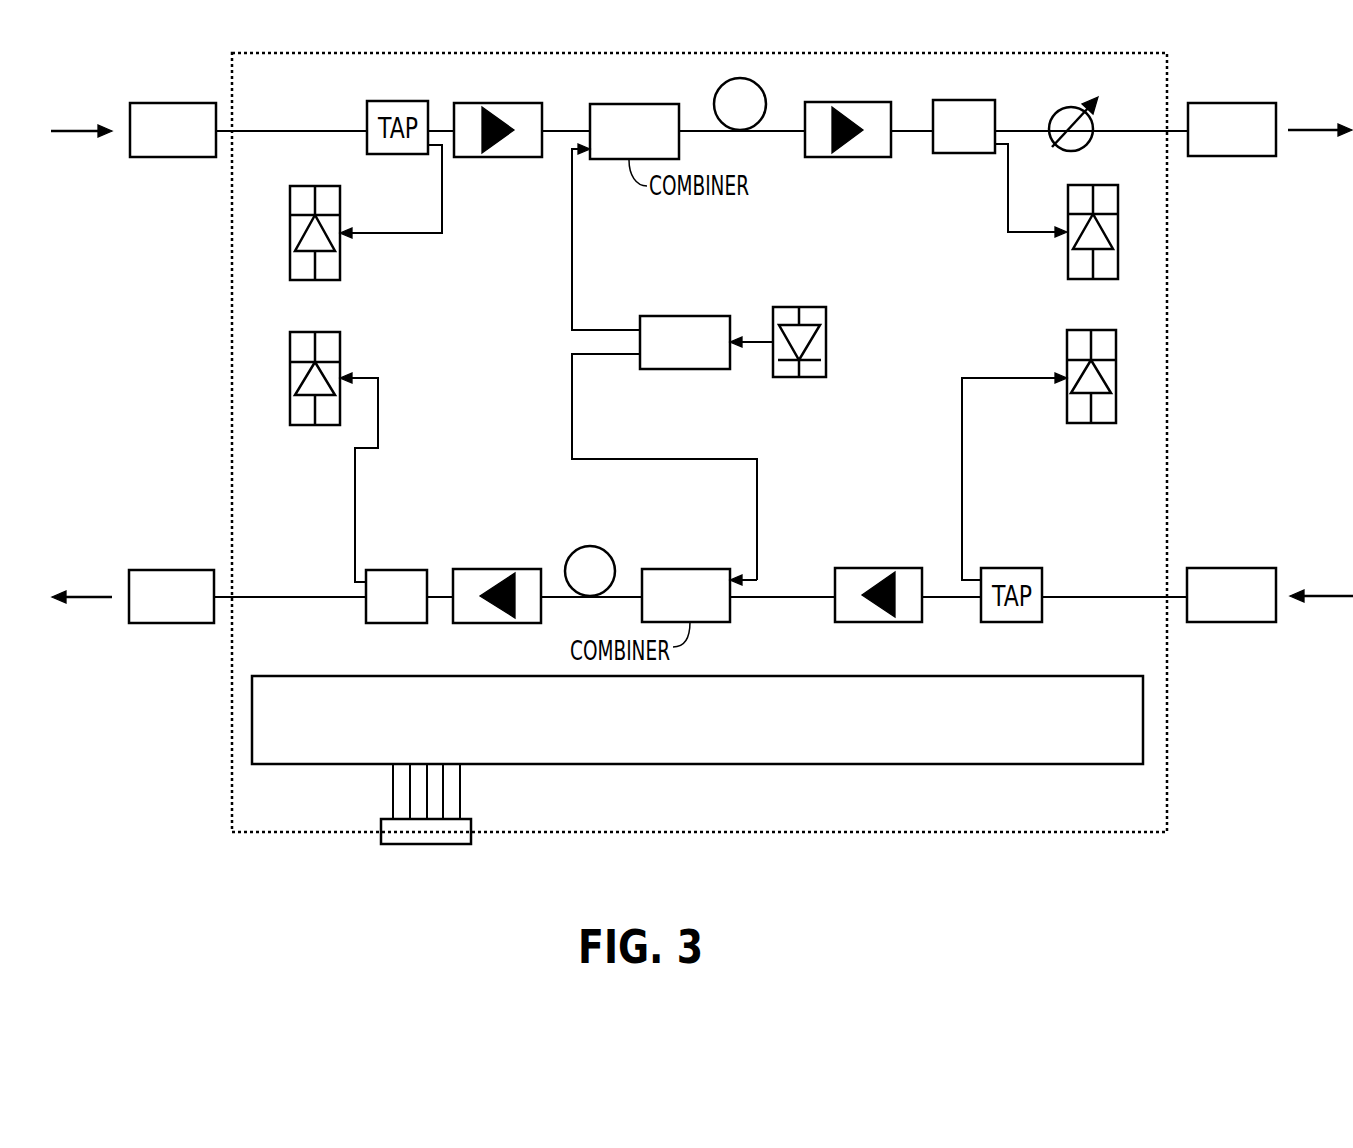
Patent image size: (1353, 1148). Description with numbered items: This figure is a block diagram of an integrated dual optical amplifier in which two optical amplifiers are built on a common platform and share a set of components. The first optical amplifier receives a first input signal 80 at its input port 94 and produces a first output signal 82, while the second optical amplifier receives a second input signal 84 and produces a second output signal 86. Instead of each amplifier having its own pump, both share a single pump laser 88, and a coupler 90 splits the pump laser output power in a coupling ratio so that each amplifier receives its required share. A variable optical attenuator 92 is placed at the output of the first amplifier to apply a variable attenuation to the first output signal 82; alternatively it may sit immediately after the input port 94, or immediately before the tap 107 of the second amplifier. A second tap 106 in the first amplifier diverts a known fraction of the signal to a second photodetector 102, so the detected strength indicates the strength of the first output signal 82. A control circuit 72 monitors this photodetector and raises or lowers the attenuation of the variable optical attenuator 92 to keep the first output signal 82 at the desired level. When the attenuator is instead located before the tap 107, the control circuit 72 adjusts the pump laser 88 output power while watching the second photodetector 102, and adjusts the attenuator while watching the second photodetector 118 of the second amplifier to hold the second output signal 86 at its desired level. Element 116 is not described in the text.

The control circuit 72 is at (717, 765).
The first input signal 80 is at (98, 128).
The first output signal 82 is at (1320, 128).
The second input signal 84 is at (1313, 596).
The second output signal 86 is at (89, 597).
The pump laser 88 is at (826, 341).
The coupler 90 is at (682, 369).
The variable optical attenuator 92 is at (1062, 108).
The input port 94 is at (175, 103).
The second photodetector 102 is at (1118, 235).
The second tap 106 is at (967, 99).
The tap 107 is at (397, 623).
The output connector/filter 116 is at (173, 570).
The second photodetector 118 is at (290, 417).